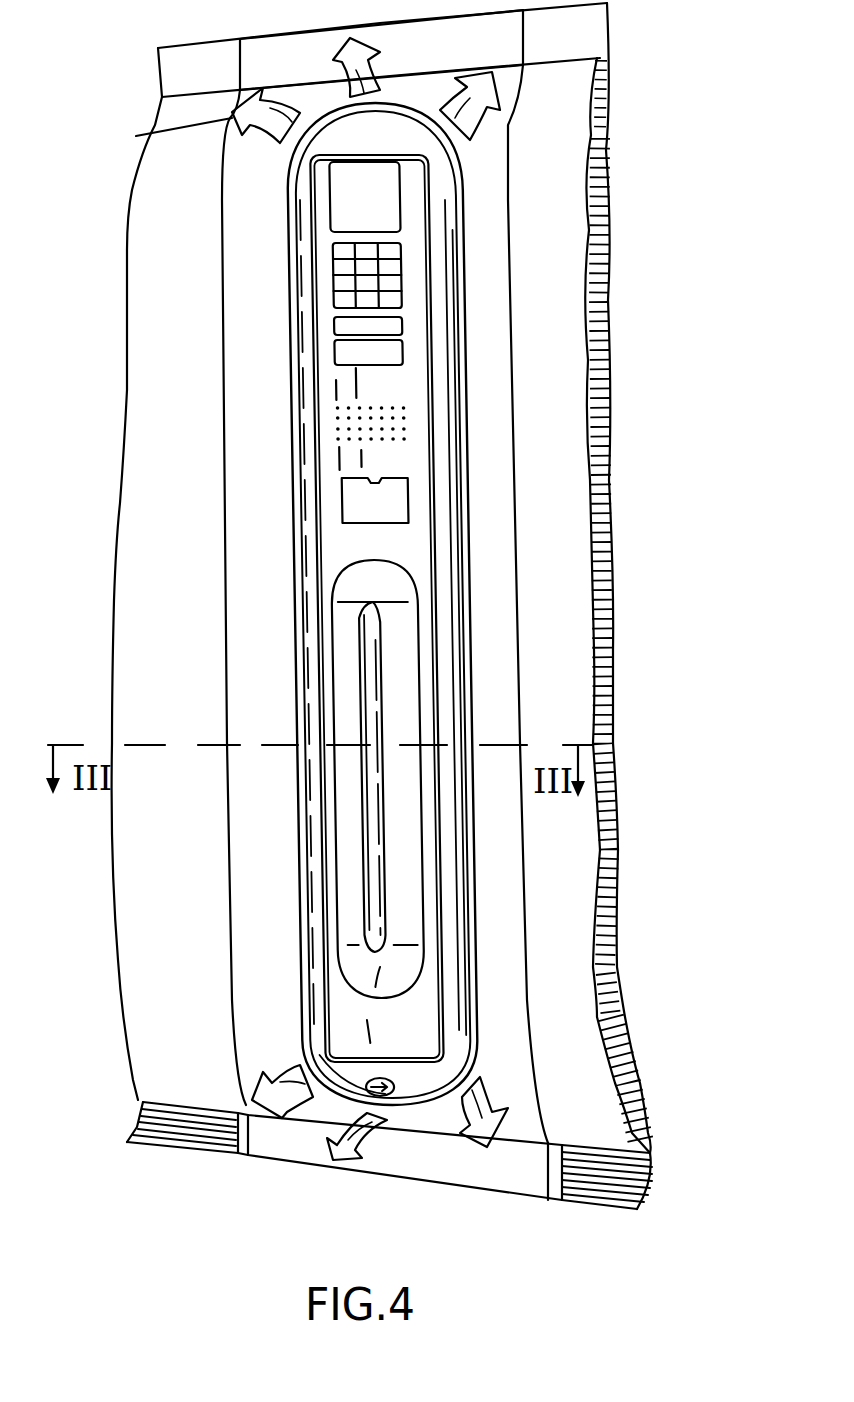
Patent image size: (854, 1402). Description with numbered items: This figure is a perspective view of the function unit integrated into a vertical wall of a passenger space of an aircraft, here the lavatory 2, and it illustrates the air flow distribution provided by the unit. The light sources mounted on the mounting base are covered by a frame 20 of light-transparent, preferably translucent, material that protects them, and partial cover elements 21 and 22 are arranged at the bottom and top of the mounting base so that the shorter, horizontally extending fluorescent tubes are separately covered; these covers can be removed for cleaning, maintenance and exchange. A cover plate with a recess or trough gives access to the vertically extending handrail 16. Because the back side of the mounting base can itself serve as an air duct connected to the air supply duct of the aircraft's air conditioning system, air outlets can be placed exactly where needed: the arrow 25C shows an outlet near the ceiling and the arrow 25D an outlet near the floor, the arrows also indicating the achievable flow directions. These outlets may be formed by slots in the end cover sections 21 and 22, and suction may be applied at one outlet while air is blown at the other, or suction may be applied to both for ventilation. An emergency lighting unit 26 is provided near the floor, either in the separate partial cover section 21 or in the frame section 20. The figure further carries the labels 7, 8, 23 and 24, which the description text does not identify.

The lavatory 2 is at (638, 141).
The portable electronic device 7 is at (496, 604).
The portable telephone 8 is at (443, 285).
The handrail 16 is at (410, 872).
The cover frame 20 is at (460, 1032).
The partial cover element 21 is at (347, 1076).
The partial cover element 22 is at (407, 137).
The right side portion 23 is at (581, 653).
The left side portion 24 is at (203, 672).
The air outlet 25C is at (150, 134).
The air outlet 25D is at (337, 1153).
The emergency lighting unit 26 is at (407, 1100).